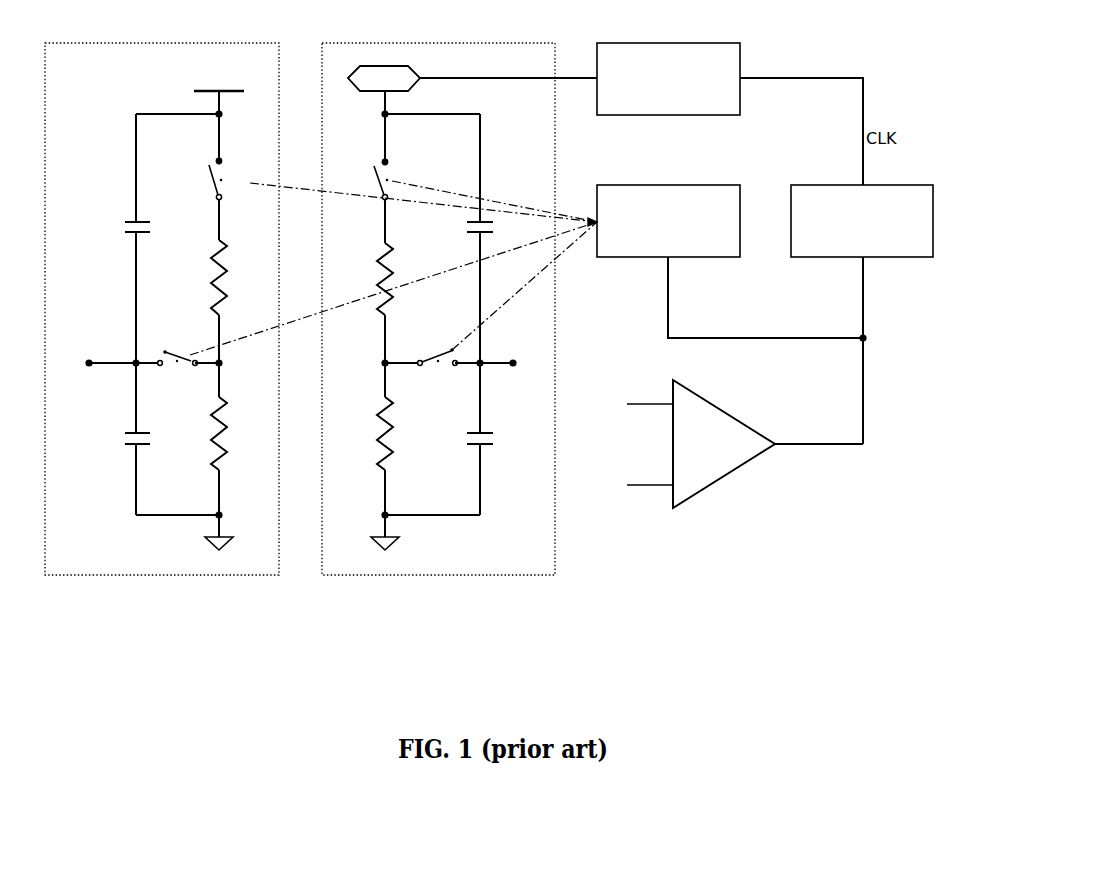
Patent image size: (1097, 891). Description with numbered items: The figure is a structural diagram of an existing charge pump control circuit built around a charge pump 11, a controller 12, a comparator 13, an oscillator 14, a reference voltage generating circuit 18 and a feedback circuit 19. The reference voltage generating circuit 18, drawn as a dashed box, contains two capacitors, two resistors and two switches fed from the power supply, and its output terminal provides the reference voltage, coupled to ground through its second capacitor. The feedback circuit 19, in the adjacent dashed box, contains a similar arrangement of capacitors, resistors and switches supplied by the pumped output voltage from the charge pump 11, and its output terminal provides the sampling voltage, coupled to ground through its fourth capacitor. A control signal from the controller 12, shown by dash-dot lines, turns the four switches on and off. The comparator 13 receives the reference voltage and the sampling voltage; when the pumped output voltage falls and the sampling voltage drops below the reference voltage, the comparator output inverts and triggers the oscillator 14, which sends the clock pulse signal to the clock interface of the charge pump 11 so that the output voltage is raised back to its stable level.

The charge pump 11 is at (640, 43).
The controller 12 is at (652, 185).
The comparator 13 is at (708, 473).
The oscillator 14 is at (920, 240).
The reference voltage generating circuit 18 is at (158, 563).
The feedback circuit 19 is at (517, 560).